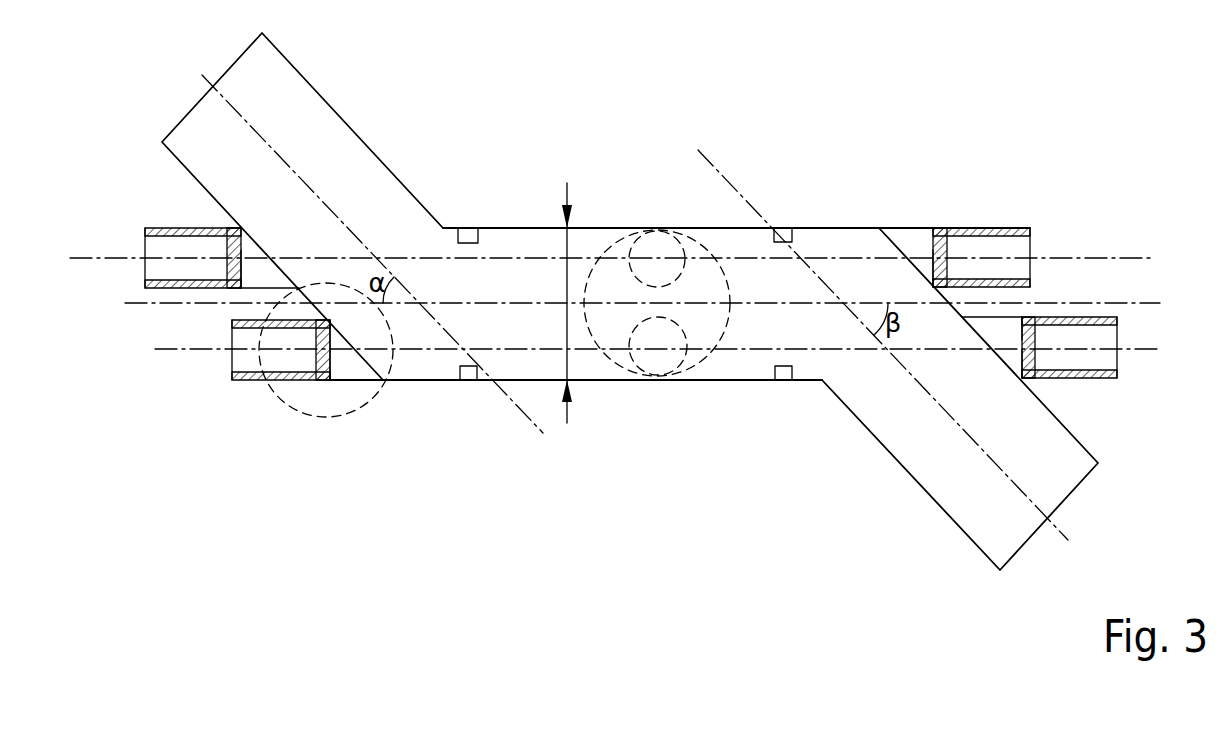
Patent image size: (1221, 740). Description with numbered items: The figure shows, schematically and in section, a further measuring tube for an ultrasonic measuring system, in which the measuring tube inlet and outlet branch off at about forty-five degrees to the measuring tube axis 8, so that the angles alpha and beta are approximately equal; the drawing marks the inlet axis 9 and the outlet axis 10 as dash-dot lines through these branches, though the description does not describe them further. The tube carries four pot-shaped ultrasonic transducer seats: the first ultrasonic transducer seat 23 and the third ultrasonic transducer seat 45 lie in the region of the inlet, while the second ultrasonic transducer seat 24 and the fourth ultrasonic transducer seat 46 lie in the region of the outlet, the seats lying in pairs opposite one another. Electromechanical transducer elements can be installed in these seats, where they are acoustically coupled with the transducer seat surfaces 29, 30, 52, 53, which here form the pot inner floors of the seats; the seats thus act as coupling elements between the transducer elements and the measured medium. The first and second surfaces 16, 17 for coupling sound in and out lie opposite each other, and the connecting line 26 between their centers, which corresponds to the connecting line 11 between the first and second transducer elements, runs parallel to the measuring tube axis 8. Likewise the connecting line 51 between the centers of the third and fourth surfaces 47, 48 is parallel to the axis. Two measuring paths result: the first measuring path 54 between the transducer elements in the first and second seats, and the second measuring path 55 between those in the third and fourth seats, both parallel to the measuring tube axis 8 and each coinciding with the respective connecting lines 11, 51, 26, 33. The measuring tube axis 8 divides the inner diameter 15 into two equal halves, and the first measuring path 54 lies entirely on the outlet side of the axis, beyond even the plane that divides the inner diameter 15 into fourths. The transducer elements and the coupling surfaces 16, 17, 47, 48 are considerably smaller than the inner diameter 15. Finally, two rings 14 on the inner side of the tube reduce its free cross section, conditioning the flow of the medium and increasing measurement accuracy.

The measuring tube axis 8 is at (137, 305).
The axis of first arm 9 is at (543, 437).
The axis of second arm 10 is at (704, 156).
The connecting line 11 is at (628, 393).
The connecting line 26 is at (628, 393).
The connecting line 33 is at (167, 352).
The rings 14 is at (470, 229).
The inner diameter 15 is at (568, 412).
The first surface for coupling sound in and/or out 16 is at (348, 358).
The second surface for coupling sound in and/or out 17 is at (1002, 330).
The first ultrasonic transducer seat 23 is at (257, 381).
The second ultrasonic transducer seat 24 is at (1117, 317).
The transducer seat surface 29 is at (348, 375).
The transducer seat surface 30 is at (1002, 360).
The third ultrasonic transducer seat 45 is at (152, 228).
The fourth ultrasonic transducer seat 46 is at (1017, 227).
The third surface for coupling sound in and/or out 47 is at (260, 241).
The fourth surface for coupling sound in and/or out 48 is at (913, 234).
The connecting line 51 is at (85, 260).
The transducer seat surface 52 is at (262, 268).
The transducer seat surface 53 is at (913, 264).
The first measuring path 54 is at (442, 352).
The second measuring path 55 is at (510, 257).